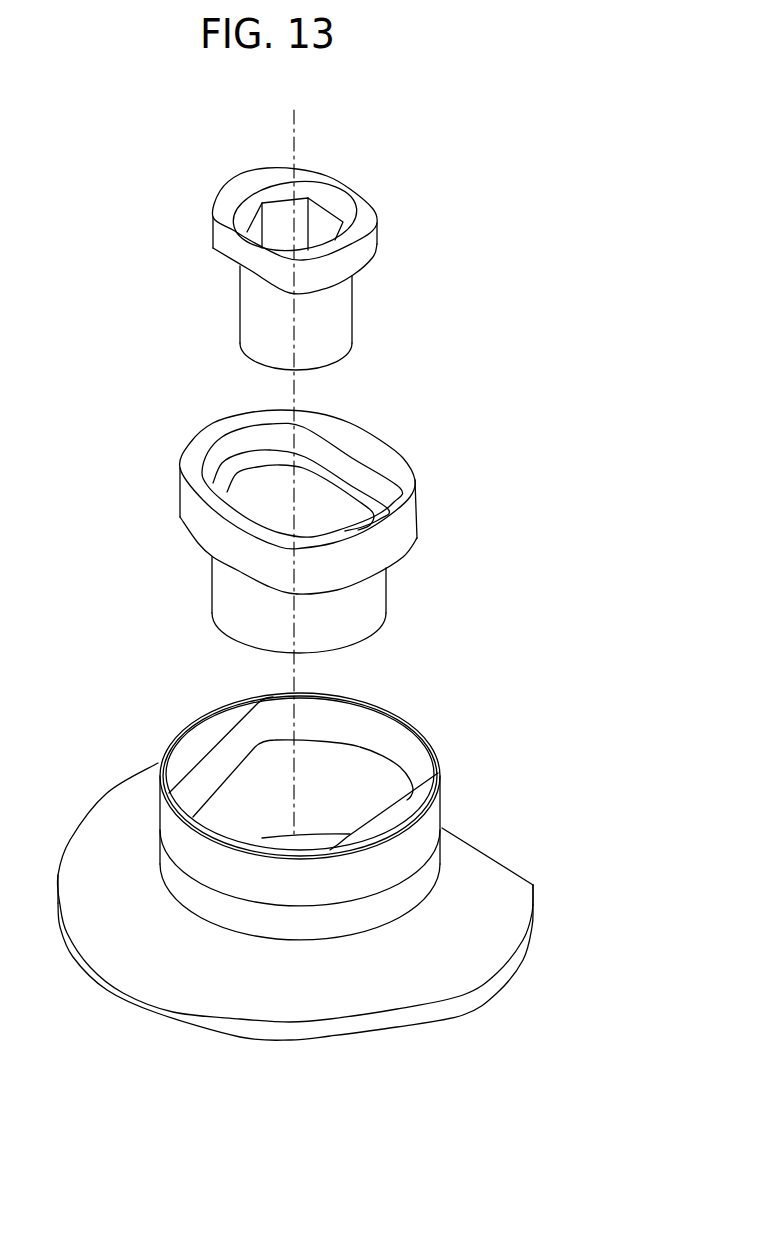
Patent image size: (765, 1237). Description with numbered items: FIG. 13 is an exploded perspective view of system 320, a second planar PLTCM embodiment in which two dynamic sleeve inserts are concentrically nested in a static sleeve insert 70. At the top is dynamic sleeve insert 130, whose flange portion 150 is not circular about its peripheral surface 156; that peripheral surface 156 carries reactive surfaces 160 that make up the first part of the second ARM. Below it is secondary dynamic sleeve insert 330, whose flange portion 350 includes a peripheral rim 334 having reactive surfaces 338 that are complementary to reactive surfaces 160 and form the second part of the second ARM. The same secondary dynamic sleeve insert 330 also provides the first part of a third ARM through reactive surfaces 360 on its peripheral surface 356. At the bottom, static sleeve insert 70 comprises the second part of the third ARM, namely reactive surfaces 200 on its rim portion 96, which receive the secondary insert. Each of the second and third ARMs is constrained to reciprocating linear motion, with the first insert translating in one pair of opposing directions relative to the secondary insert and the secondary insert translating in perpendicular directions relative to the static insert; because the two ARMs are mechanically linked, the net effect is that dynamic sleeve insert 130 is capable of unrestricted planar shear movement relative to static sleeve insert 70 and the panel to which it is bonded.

The system 320 is at (217, 147).
The dynamic sleeve insert 130 is at (310, 269).
The flange portion 150 is at (364, 218).
The peripheral surface 156 is at (367, 256).
The reactive surfaces 160 is at (240, 250).
The secondary dynamic sleeve insert 330 is at (295, 512).
The peripheral rim 334 is at (290, 454).
The reactive surfaces 338 is at (341, 472).
The flange portion 350 is at (256, 479).
The peripheral surface 356 is at (215, 538).
The reactive surfaces 360 is at (395, 537).
The static sleeve insert 70 is at (309, 855).
The rim portion 96 is at (411, 723).
The reactive surfaces 200 is at (229, 735).